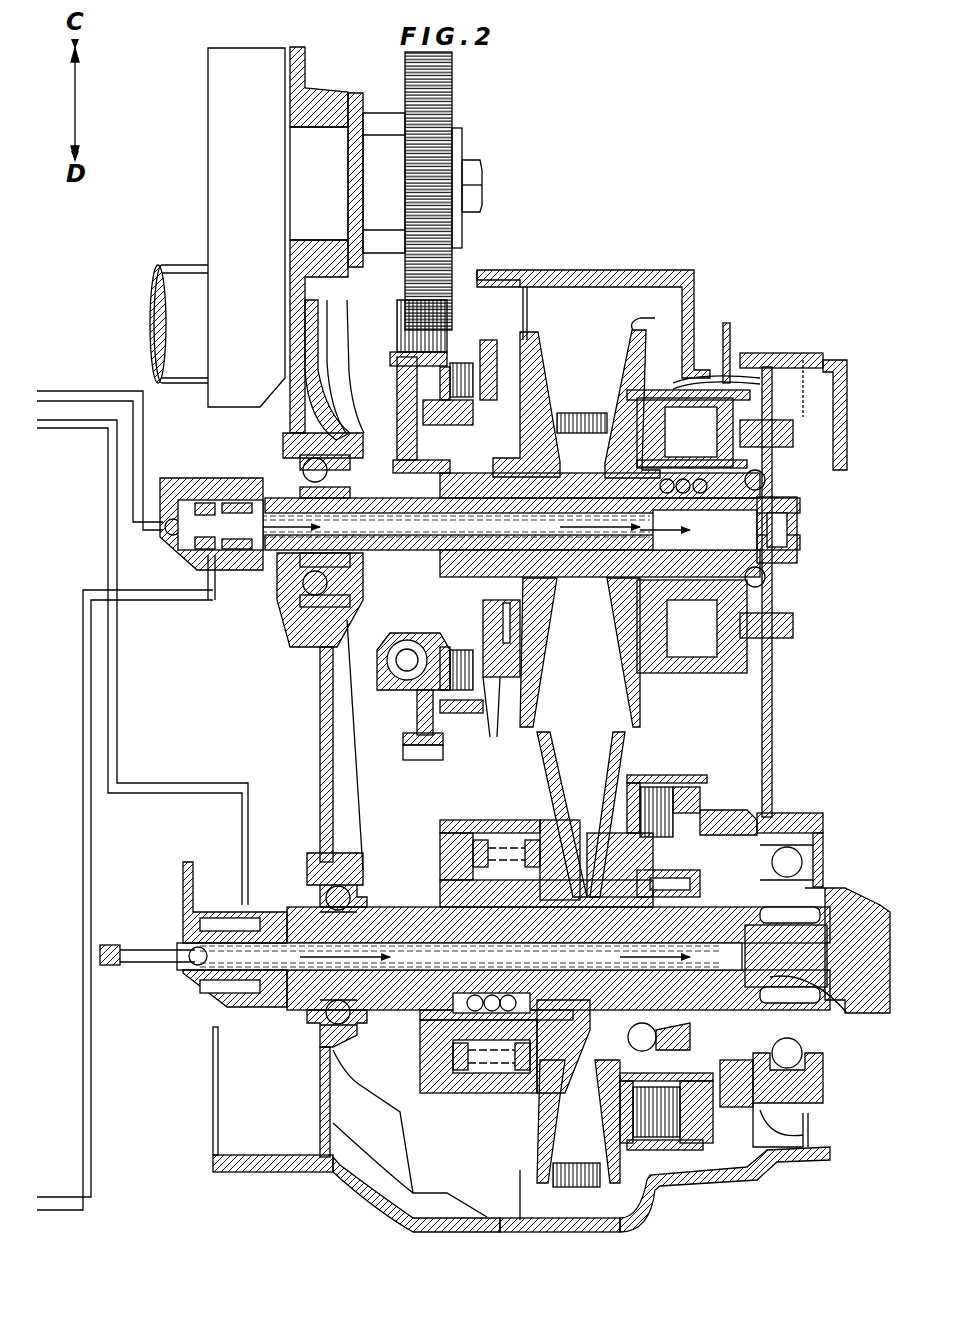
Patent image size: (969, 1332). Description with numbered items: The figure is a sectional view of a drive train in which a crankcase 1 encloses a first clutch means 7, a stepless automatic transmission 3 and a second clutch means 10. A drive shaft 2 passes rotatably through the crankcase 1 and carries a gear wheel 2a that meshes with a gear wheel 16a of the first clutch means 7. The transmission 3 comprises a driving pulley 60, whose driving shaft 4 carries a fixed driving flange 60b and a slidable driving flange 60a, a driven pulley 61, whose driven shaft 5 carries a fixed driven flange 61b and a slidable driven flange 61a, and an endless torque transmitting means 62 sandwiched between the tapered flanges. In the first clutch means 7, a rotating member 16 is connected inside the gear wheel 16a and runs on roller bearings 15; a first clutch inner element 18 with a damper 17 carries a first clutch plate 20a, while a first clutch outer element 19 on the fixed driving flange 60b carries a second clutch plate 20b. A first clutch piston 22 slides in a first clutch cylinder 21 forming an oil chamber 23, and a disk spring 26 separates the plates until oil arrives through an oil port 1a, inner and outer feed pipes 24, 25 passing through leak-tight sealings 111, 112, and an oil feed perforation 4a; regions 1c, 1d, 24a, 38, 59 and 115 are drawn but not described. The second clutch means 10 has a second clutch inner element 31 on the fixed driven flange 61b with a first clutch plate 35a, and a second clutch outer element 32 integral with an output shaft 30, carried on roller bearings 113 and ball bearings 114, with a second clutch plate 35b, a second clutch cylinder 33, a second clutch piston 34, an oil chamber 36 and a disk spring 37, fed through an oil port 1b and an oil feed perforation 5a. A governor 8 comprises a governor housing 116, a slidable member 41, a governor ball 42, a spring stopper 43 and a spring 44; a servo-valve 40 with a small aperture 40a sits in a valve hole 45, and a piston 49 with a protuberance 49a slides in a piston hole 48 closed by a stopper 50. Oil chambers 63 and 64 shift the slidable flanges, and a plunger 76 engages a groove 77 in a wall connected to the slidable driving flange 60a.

The crankcase 1 is at (316, 698).
The oil port 1a is at (228, 577).
The oil port 1b is at (176, 965).
The oil passage 1c is at (162, 540).
The oil passage 1d is at (247, 905).
The drive shaft 2 is at (386, 120).
The gear wheel 2a is at (398, 295).
The stepless automatic transmission 3 is at (618, 325).
The driving shaft 4 is at (312, 585).
The oil feed perforation 4a is at (576, 408).
The driven shaft 5 is at (302, 998).
The oil feed perforation 5a is at (786, 956).
The first clutch means 7 is at (500, 288).
The governor 8 is at (635, 1040).
The second clutch means 10 is at (748, 740).
The roller bearings 15 is at (340, 590).
The rotating member 16 is at (398, 433).
The gear wheel 16a is at (405, 322).
The damper 17 is at (392, 678).
The first clutch inner element 18 is at (448, 428).
The first clutch outer element 19 is at (501, 363).
The first clutch plate 20a is at (518, 334).
The second clutch plate 20b is at (485, 306).
The first clutch cylinder 21 is at (522, 645).
The first clutch piston 22 is at (488, 692).
The oil chamber 23 is at (520, 625).
The inner feed pipe 24 is at (200, 505).
The movable sheave 24a is at (575, 583).
The outer feed pipe 25 is at (230, 505).
The disk spring 26 is at (482, 612).
The output shaft 30 is at (860, 908).
The second clutch inner element 31 is at (581, 814).
The second clutch outer element 32 is at (690, 790).
The second clutch cylinder 33 is at (775, 815).
The second clutch piston 34 is at (720, 820).
The first clutch plate 35a is at (645, 795).
The second clutch plate 35b is at (670, 775).
The oil chamber 36 is at (765, 810).
The disk spring 37 is at (712, 800).
The oil seal 38 is at (237, 992).
The servo-valve 40 is at (705, 1100).
The small aperture 40a is at (705, 1152).
The slidable member 41 is at (578, 1121).
The governor ball 42 is at (540, 1090).
The spring stopper 43 is at (690, 1130).
The spring 44 is at (665, 1150).
The valve hole 45 is at (812, 1052).
The piston hole 48 is at (805, 865).
The piston 49 is at (818, 825).
The protuberance 49a is at (542, 800).
The stopper 50 is at (560, 845).
The plug 59 is at (112, 966).
The driving pulley 60 is at (580, 303).
The slidable driving flange 60a is at (650, 312).
The fixed driving flange 60b is at (540, 352).
The driven pulley 61 is at (550, 1195).
The slidable driven flange 61a is at (525, 1118).
The fixed driven flange 61b is at (616, 1222).
The endless torque transmitting means 62 is at (582, 1190).
The oil chamber 63 is at (655, 445).
The oil chamber 64 is at (455, 1098).
The plunger 76 is at (732, 340).
The groove 77 is at (700, 374).
The leak-tight sealing 111 is at (315, 640).
The leak-tight sealing 112 is at (680, 530).
The roller bearings 113 is at (812, 1008).
The ball bearings 114 is at (822, 1088).
The wall 115 is at (845, 1010).
The governor housing 116 is at (745, 775).